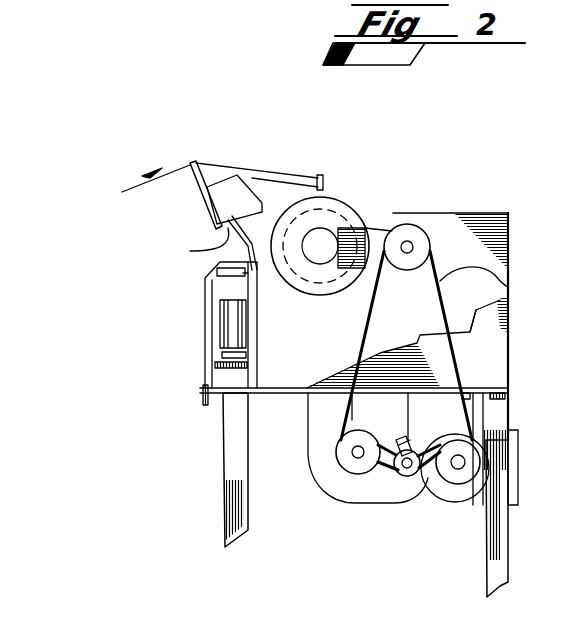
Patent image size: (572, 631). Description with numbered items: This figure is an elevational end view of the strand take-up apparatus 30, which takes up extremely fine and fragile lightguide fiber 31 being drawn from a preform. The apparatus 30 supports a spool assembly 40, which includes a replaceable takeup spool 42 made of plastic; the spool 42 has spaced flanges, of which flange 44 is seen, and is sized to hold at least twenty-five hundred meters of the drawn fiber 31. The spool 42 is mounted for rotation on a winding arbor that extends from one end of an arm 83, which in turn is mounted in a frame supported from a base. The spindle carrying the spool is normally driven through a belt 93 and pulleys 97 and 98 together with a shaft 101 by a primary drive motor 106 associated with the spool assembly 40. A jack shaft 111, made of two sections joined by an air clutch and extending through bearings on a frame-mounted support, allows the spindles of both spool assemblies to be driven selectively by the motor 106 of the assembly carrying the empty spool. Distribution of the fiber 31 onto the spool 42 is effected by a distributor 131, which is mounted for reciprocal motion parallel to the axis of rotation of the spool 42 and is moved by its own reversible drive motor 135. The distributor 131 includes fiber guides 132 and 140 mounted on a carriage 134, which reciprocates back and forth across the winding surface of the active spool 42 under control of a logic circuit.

The strand take-up apparatus 30 is at (487, 150).
The lightguide fiber 31 is at (122, 190).
The spool assembly 40 is at (340, 185).
The takeup spool 42 is at (353, 189).
The flange 44 is at (308, 296).
The arm 83 is at (360, 228).
The belt 93 is at (507, 287).
The pulley 97 is at (407, 246).
The pulley 98 is at (347, 469).
The shaft 101 is at (445, 206).
The primary drive motor 106 is at (333, 487).
The jack shaft 111 is at (466, 460).
The distributor 131 is at (200, 200).
The fiber guide 132 is at (333, 172).
The carriage 134 is at (238, 245).
The reversible drive motor 135 is at (215, 328).
The fiber guide 140 is at (192, 162).